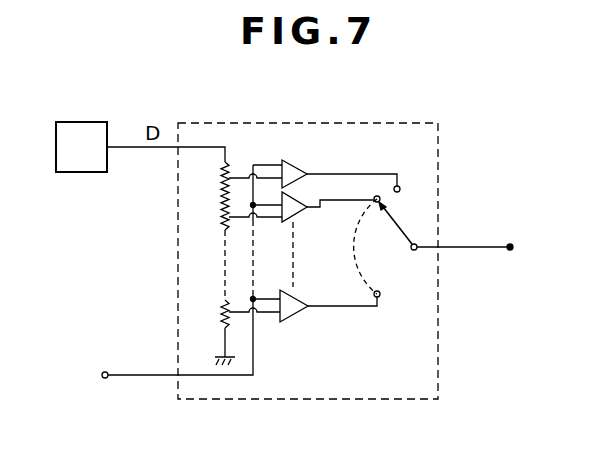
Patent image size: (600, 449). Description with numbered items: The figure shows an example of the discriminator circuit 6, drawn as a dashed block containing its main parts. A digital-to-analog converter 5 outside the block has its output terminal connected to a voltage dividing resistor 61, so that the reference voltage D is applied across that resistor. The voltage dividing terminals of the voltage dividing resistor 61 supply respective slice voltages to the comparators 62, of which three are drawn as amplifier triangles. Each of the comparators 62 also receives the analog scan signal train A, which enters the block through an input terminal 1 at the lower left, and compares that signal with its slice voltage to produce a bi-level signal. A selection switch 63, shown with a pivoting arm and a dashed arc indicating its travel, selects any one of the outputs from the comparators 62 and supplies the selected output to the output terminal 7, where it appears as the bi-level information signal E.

The digital-to-analog converter 5 is at (95, 122).
The discriminator circuit 6 is at (438, 123).
The output terminal 7 is at (509, 244).
The voltage dividing resistor 61 is at (221, 214).
The comparators 62 is at (300, 165).
The selection switch 63 is at (383, 262).
The input terminal 1 is at (105, 340).